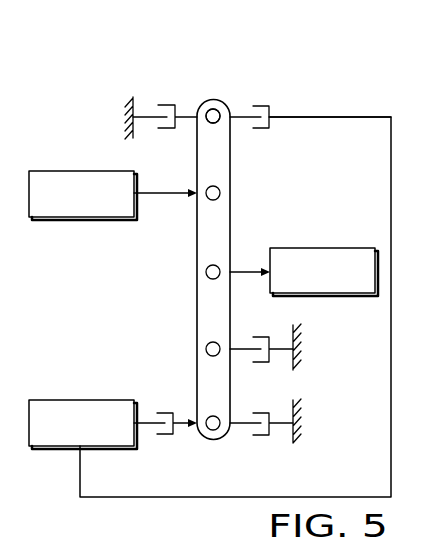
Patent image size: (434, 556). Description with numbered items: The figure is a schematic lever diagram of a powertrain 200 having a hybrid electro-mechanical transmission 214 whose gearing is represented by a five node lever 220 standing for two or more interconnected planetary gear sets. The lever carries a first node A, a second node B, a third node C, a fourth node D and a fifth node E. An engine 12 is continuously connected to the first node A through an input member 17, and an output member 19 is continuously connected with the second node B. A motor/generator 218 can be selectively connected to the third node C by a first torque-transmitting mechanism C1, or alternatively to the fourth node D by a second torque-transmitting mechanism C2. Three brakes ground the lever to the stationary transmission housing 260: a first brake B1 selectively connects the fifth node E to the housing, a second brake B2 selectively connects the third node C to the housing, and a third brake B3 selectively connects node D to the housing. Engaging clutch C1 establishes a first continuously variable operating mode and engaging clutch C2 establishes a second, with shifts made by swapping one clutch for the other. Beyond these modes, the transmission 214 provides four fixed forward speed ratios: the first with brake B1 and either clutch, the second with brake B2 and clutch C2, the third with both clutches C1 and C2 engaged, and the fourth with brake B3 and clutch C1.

The powertrain 200 is at (147, 30).
The transmission 214 is at (261, 35).
The five node lever 220 is at (213, 99).
The engine 12 is at (80, 171).
The input member 17 is at (166, 195).
The output member 19 is at (320, 248).
The motor/generator 218 is at (80, 400).
The transmission housing 260 is at (132, 97).
The first node A is at (213, 201).
The second node B is at (212, 280).
The third node C is at (210, 415).
The fourth node D is at (212, 124).
The fifth node E is at (212, 341).
The first brake B1 is at (261, 373).
The second brake B2 is at (261, 448).
The third brake B3 is at (165, 94).
The first torque-transmitting mechanism C1 is at (163, 445).
The second torque-transmitting mechanism C2 is at (261, 138).